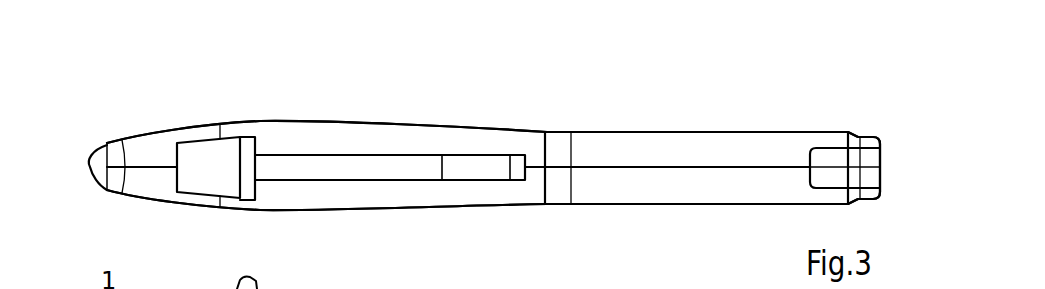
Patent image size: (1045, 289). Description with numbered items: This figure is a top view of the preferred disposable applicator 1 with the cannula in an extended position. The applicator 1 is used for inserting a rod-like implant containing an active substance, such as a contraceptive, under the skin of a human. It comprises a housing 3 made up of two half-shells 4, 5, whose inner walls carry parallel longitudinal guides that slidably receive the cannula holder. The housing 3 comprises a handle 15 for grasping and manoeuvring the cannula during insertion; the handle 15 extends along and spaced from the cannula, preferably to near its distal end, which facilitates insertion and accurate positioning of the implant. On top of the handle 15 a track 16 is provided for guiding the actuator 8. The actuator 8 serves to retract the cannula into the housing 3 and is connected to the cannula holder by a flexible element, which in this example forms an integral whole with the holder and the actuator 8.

The disposable applicator 1 is at (147, 112).
The housing 3 is at (732, 130).
The half-shell 4 is at (619, 152).
The half-shell 5 is at (650, 183).
The actuator 8 is at (210, 162).
The handle 15 is at (300, 138).
The track 16 is at (371, 155).